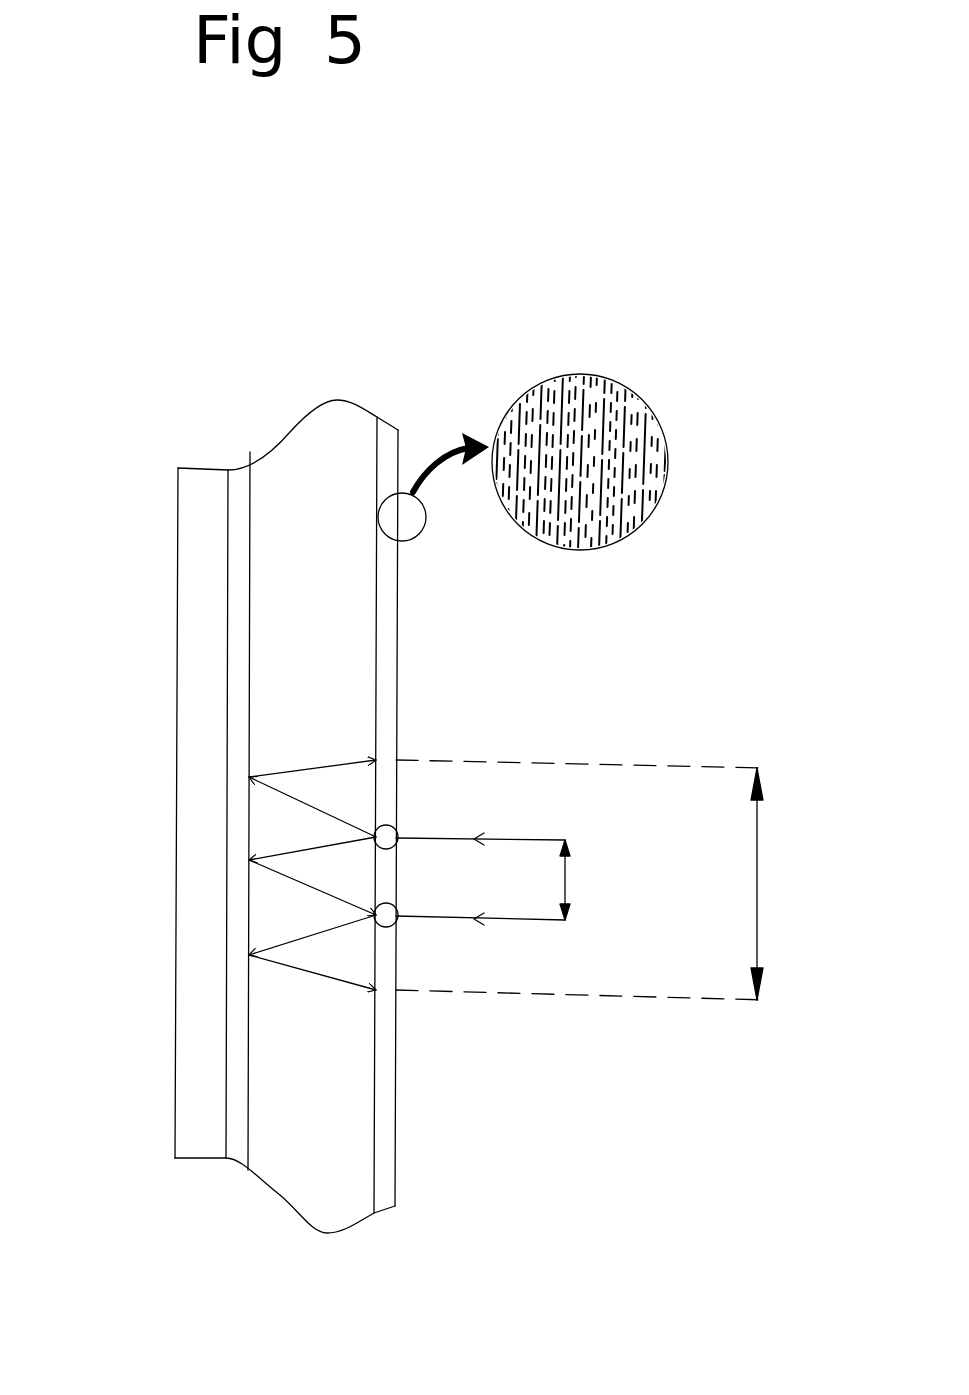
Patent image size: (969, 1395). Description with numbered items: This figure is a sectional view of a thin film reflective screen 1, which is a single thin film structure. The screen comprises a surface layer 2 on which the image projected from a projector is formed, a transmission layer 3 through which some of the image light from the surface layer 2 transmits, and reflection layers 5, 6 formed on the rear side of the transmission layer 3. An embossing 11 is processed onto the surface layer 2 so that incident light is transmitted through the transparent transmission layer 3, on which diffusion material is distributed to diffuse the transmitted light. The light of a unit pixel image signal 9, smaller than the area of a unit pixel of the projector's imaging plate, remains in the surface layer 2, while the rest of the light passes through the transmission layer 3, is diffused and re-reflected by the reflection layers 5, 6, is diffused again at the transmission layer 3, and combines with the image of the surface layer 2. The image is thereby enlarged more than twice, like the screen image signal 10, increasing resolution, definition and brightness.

The thin film reflective screen 1 is at (280, 412).
The surface layer 2 is at (380, 692).
The transmission layer 3 is at (330, 1137).
The reflection layer 5 is at (233, 1120).
The reflection layer 6 is at (195, 1047).
The unit pixel image signal 9 is at (507, 881).
The screen image signal 10 is at (618, 880).
The embossing 11 is at (600, 397).